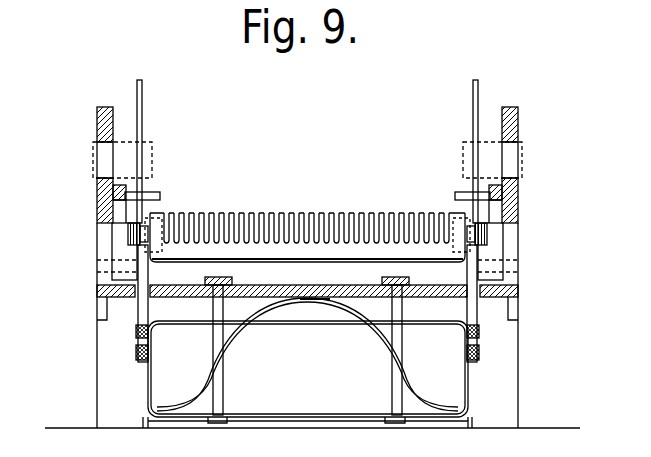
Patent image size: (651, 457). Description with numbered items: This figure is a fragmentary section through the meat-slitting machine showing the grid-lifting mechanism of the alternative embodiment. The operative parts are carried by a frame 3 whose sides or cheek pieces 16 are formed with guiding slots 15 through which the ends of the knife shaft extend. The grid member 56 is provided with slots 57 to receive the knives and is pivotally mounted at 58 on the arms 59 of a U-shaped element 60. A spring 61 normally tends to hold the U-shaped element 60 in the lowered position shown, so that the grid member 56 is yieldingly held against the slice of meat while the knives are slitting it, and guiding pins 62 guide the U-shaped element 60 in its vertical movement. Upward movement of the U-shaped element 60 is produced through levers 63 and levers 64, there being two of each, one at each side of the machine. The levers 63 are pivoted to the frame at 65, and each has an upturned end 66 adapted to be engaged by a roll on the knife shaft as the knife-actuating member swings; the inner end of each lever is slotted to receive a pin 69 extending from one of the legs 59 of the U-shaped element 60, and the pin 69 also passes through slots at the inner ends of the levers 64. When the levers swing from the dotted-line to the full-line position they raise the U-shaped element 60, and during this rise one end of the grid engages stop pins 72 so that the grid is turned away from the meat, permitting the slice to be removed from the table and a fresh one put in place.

The frame 3 is at (377, 307).
The guiding slots 15 is at (100, 152).
The cheek pieces 16 is at (104, 106).
The grid member 56 is at (307, 203).
The slots 57 is at (257, 213).
The pivot 58 is at (157, 230).
The arms 59 is at (150, 316).
The U-shaped element 60 is at (350, 415).
The spring 61 is at (257, 313).
The guiding pins 62 is at (219, 372).
The levers 63 is at (140, 306).
The levers 64 is at (143, 362).
The pivot 65 is at (123, 263).
The upturned end 66 is at (142, 107).
The pin 69 is at (135, 341).
The stop pins 72 is at (157, 193).